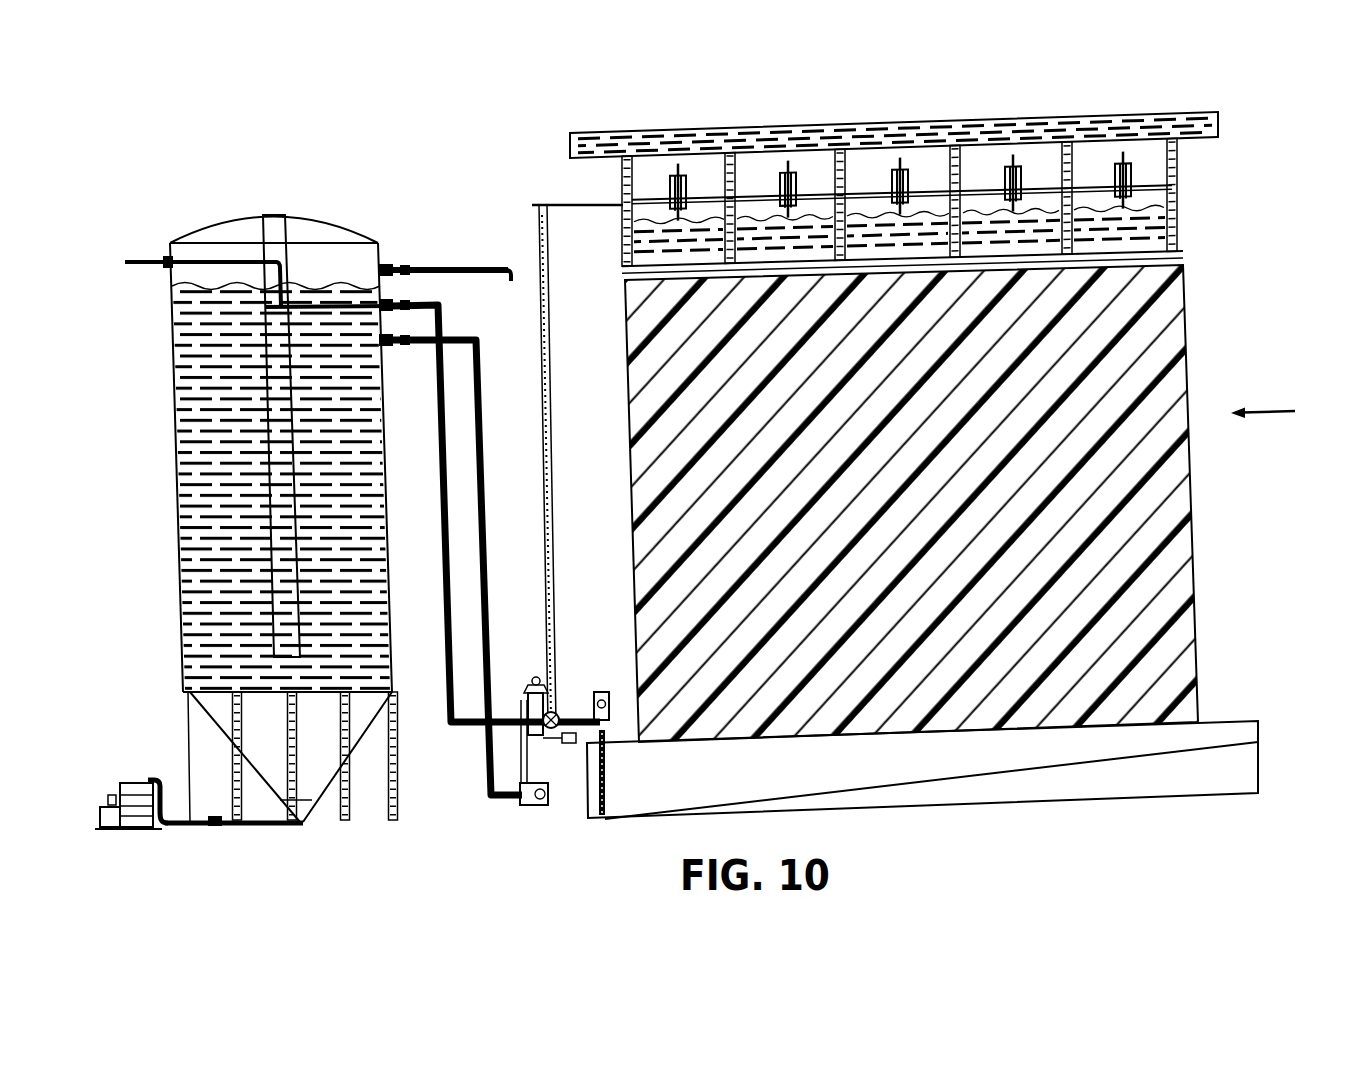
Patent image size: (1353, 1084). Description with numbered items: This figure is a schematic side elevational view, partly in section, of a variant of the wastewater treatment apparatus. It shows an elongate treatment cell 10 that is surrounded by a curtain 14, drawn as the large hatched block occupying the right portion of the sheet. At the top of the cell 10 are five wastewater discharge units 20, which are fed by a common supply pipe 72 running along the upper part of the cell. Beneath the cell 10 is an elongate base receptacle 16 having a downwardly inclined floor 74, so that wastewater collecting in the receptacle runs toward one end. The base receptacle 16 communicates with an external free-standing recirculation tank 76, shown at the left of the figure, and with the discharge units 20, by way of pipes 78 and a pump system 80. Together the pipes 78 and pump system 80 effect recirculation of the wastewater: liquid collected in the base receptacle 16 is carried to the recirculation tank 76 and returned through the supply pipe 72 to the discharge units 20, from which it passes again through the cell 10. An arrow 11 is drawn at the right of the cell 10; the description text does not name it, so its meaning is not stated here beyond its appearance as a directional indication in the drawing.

The treatment cell 10 is at (598, 325).
The gas flow direction arrow 11 is at (1270, 436).
The curtain 14 is at (647, 458).
The base receptacle 16 is at (1217, 732).
The wastewater discharge units 20 is at (690, 200).
The common supply pipe 72 is at (560, 203).
The downwardly inclined floor 74 is at (853, 790).
The recirculation tank 76 is at (153, 456).
The pipes 78 is at (476, 412).
The pump system 80 is at (499, 812).